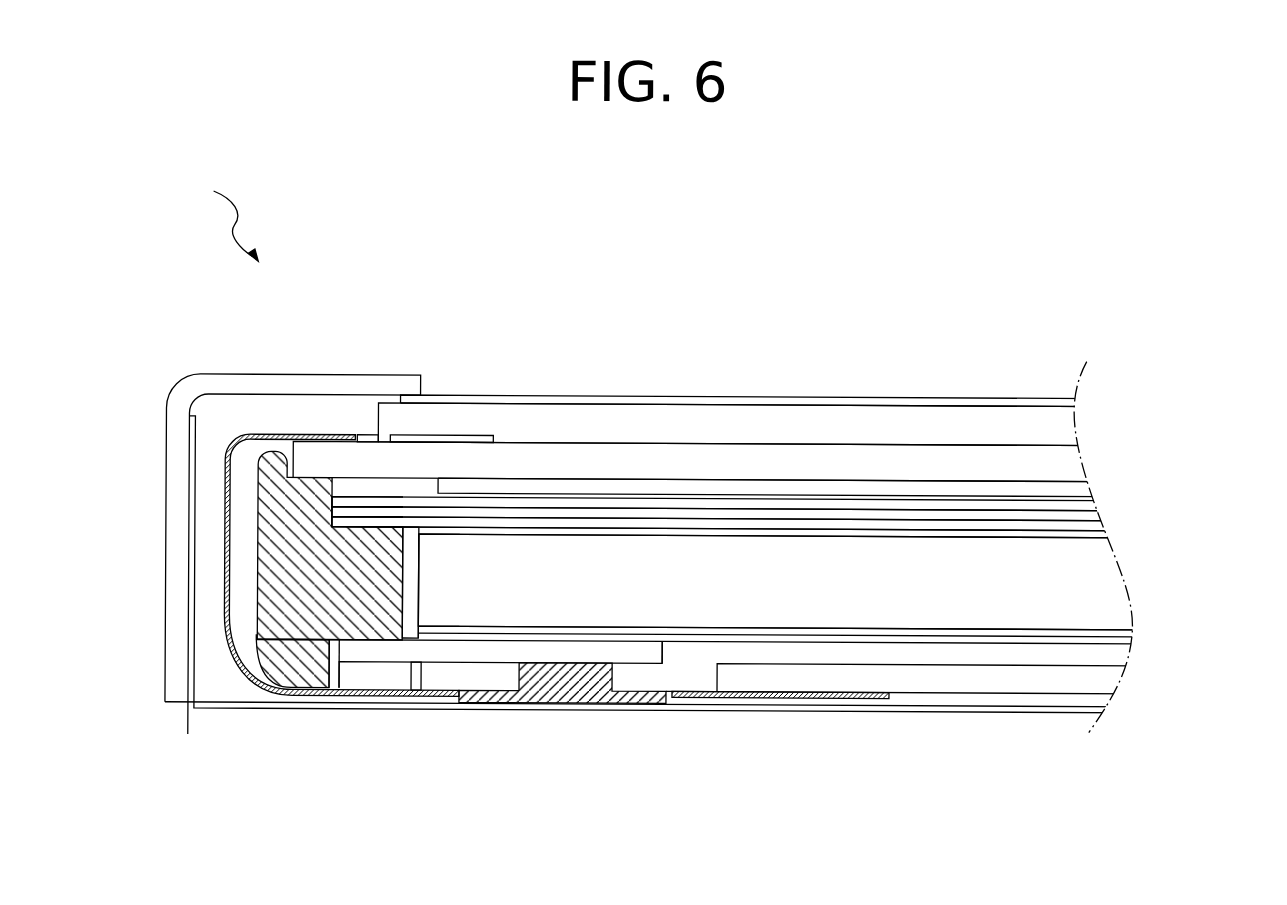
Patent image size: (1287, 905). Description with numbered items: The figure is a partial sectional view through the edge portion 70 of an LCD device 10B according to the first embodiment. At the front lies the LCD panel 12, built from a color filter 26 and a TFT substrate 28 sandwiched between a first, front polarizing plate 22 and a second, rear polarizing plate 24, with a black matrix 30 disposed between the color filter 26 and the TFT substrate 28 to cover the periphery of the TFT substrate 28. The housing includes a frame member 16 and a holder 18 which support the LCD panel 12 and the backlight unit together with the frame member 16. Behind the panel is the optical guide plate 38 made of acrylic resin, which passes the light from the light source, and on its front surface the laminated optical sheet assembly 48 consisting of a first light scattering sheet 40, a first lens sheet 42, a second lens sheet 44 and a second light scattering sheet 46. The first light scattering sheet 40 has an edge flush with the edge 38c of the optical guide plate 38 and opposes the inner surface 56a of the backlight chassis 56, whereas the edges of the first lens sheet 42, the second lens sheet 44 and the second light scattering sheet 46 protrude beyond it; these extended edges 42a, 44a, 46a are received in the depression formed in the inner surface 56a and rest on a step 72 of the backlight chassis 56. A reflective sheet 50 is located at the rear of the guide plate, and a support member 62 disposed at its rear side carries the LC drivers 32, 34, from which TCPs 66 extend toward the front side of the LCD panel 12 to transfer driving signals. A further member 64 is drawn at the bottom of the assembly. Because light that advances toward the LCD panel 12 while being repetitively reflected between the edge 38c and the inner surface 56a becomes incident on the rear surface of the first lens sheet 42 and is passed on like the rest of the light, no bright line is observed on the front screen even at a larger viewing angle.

The LCD device 10B is at (851, 200).
The LCD panel 12 is at (714, 387).
The frame member 16 is at (175, 428).
The holder 18 is at (398, 707).
The first polarizing plate 22 is at (667, 400).
The second polarizing plate 24 is at (498, 322).
The color filter 26 is at (565, 418).
The TFT substrate 28 is at (512, 452).
The black matrix 30 is at (472, 438).
The LC driver 32 is at (798, 743).
The LC driver 34 is at (563, 690).
The optical guide plate 38 is at (1117, 579).
The edge of the optical conductive sheet 38c is at (415, 556).
The first light scattering sheet 40 is at (772, 527).
The first lens sheet 42 is at (1105, 519).
The extended edge 42a is at (395, 523).
The second lens sheet 44 is at (1098, 513).
The extended edge 44a is at (363, 513).
The second light scattering sheet 46 is at (1093, 504).
The extended edge 46a is at (350, 502).
The optical sheet assembly 48 is at (804, 483).
The reflective sheet 50 is at (1120, 632).
The backlight chassis 56 is at (298, 660).
The inner surface of the backlight chassis 56a is at (412, 593).
The support member 62 is at (430, 652).
The mold frame 64 is at (360, 668).
The TCP 66 is at (227, 650).
The edge portion 70 is at (222, 211).
The step 72 is at (372, 542).